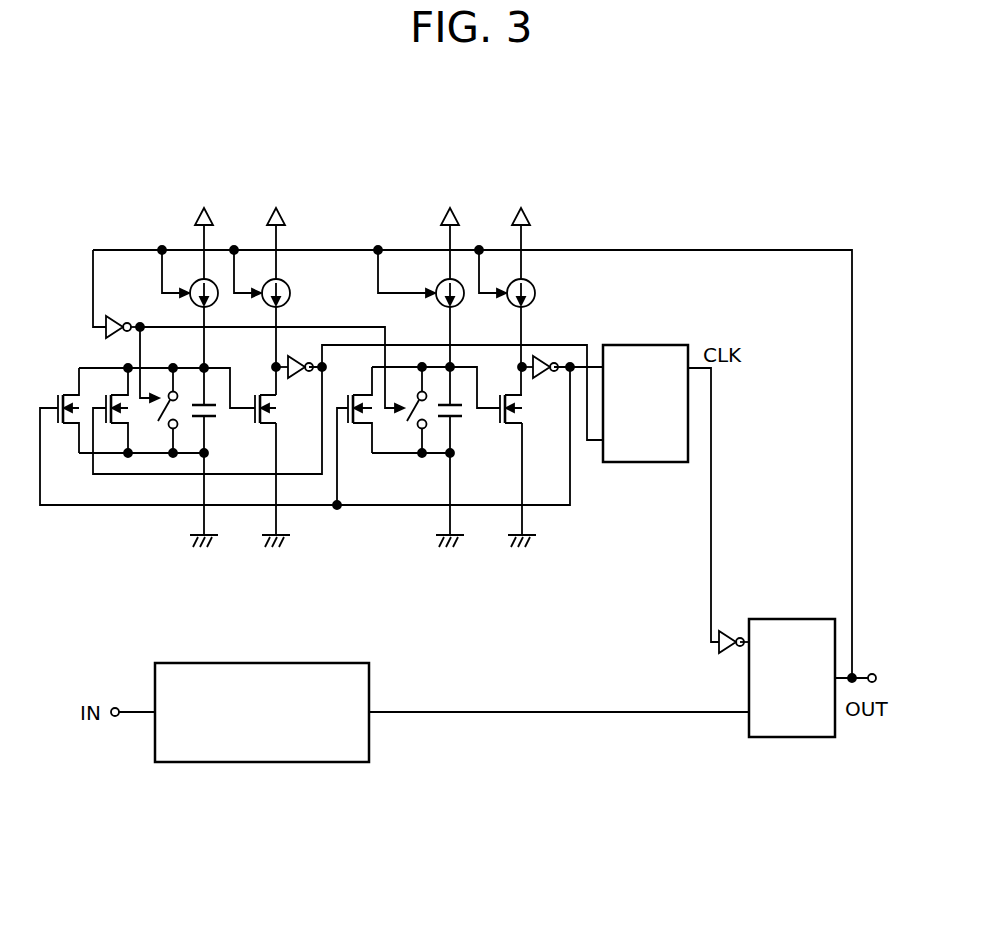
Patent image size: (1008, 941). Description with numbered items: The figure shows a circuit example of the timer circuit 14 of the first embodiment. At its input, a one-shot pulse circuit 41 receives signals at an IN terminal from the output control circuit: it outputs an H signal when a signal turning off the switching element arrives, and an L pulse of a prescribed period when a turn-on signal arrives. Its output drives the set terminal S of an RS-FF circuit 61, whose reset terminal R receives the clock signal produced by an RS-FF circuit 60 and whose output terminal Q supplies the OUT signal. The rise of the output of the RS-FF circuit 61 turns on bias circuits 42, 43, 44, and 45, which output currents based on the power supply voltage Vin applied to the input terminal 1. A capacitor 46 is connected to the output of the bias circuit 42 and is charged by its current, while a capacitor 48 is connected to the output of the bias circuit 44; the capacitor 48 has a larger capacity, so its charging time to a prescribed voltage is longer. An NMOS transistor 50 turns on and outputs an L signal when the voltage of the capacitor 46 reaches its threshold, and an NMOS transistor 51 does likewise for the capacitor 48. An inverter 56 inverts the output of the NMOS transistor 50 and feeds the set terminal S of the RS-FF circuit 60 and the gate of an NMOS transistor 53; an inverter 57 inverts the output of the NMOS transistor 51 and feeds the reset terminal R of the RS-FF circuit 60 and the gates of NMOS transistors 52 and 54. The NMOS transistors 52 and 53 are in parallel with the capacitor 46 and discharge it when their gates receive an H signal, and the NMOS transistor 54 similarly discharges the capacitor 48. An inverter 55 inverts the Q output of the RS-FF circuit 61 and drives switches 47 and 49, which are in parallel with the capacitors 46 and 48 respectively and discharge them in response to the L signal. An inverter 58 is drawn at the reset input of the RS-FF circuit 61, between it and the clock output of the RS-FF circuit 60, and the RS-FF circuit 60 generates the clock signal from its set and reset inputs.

The timer circuit 14 is at (673, 139).
The input terminal 1 is at (530, 208).
The one-shot pulse circuit 41 is at (255, 763).
The bias circuit 42 is at (218, 297).
The bias circuit 43 is at (291, 294).
The bias circuit 44 is at (463, 300).
The bias circuit 45 is at (534, 300).
The capacitor 46 is at (217, 412).
The switch 47 is at (161, 426).
The capacitor 48 is at (463, 412).
The switch 49 is at (410, 428).
The NMOS transistor 50 is at (277, 418).
The NMOS transistor 51 is at (528, 418).
The NMOS transistor 52 is at (73, 424).
The NMOS transistor 53 is at (116, 382).
The NMOS transistor 54 is at (349, 393).
The inverter 55 is at (106, 312).
The inverter 56 is at (288, 366).
The inverter 57 is at (549, 378).
The inverter 58 is at (724, 656).
The RS-FF circuit 60 is at (648, 463).
The RS-FF circuit 61 is at (792, 738).